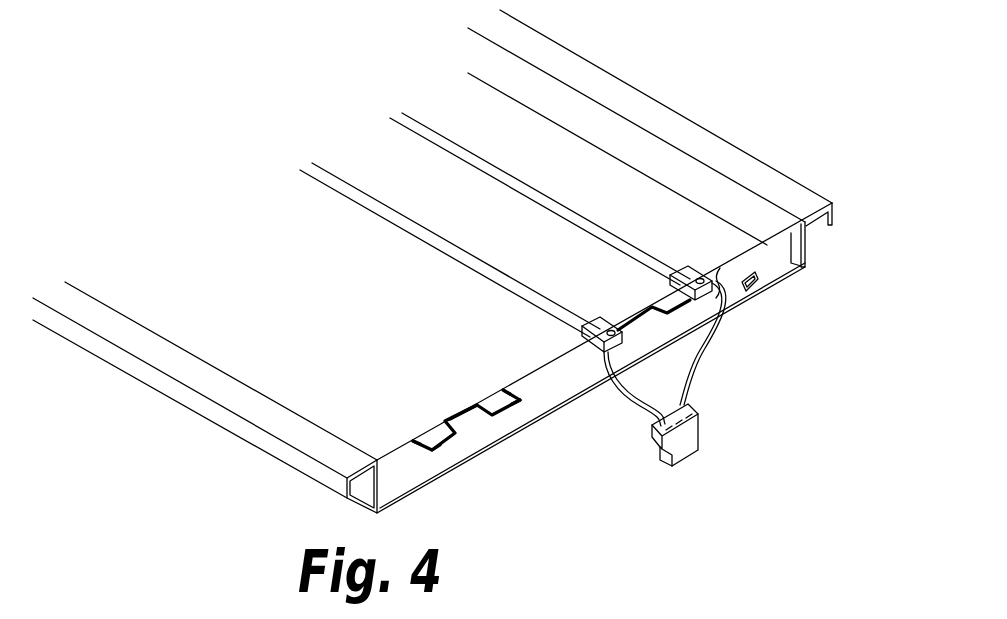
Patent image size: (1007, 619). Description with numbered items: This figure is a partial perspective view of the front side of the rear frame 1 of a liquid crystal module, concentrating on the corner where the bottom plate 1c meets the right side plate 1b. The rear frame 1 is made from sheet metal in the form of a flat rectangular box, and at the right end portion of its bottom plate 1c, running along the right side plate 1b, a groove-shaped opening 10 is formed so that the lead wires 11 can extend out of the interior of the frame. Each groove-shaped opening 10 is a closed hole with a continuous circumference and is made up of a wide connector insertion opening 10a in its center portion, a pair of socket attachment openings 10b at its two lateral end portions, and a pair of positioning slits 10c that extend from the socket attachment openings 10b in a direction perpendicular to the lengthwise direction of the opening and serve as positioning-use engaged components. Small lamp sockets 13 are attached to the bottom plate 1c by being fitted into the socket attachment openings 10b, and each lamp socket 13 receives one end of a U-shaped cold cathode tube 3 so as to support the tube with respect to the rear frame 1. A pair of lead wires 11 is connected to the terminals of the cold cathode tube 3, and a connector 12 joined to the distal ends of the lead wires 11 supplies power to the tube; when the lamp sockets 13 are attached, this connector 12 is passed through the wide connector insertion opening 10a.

The rear frame 1 is at (737, 97).
The right side plate 1b is at (780, 268).
The bottom plate 1c is at (577, 155).
The cold cathode tube 3 is at (339, 182).
The groove-shaped opening 10 is at (485, 425).
The wide connector insertion opening 10a is at (470, 407).
The socket attachment opening 10b is at (430, 446).
The positioning slit 10c is at (412, 441).
The lead wire 11 is at (621, 392).
The connector 12 is at (683, 443).
The lamp socket 13 is at (592, 318).